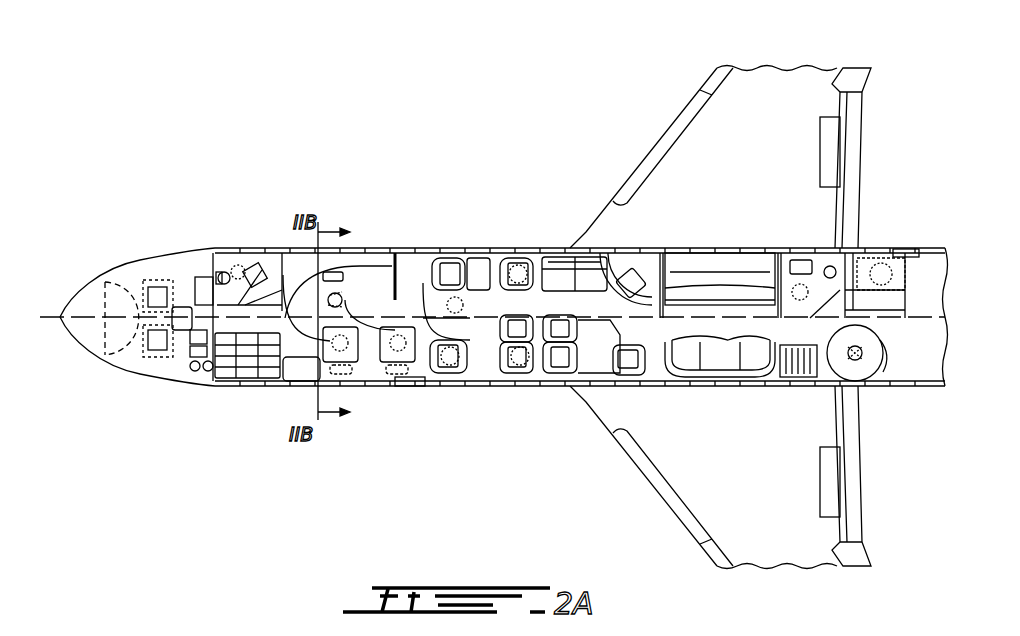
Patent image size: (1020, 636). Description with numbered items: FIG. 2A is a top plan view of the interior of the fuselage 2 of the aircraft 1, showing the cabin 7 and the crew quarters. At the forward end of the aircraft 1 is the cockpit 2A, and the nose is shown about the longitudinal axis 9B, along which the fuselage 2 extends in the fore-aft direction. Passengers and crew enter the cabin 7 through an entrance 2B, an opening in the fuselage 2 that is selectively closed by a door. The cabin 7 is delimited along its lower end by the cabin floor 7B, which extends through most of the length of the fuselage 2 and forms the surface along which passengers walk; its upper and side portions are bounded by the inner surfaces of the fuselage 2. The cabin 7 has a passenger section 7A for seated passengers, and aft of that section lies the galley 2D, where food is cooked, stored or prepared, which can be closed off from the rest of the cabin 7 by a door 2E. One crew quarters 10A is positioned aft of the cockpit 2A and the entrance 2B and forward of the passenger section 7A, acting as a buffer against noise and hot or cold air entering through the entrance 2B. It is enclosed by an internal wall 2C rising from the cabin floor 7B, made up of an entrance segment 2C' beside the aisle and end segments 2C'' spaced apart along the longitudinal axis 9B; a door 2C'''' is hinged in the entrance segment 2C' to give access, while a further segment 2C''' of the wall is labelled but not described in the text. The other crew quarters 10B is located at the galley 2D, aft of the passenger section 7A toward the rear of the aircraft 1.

The aircraft 1 is at (254, 150).
The fuselage 2 is at (224, 243).
The cockpit 2A is at (148, 283).
The entrance 2B is at (284, 392).
The internal wall 2C is at (348, 285).
The entrance segment 2C' is at (404, 284).
The end segments 2C'' is at (393, 282).
The cabin sub-zone 2C''' is at (493, 259).
The door 2C'''' is at (480, 360).
The galley 2D is at (916, 247).
The door 2E is at (905, 387).
The cabin 7 is at (412, 276).
The passenger section 7A is at (575, 298).
The cabin floor 7B is at (490, 300).
The longitudinal axis 9B is at (88, 306).
The crew quarters 10A is at (410, 384).
The crew quarters 10B is at (905, 242).